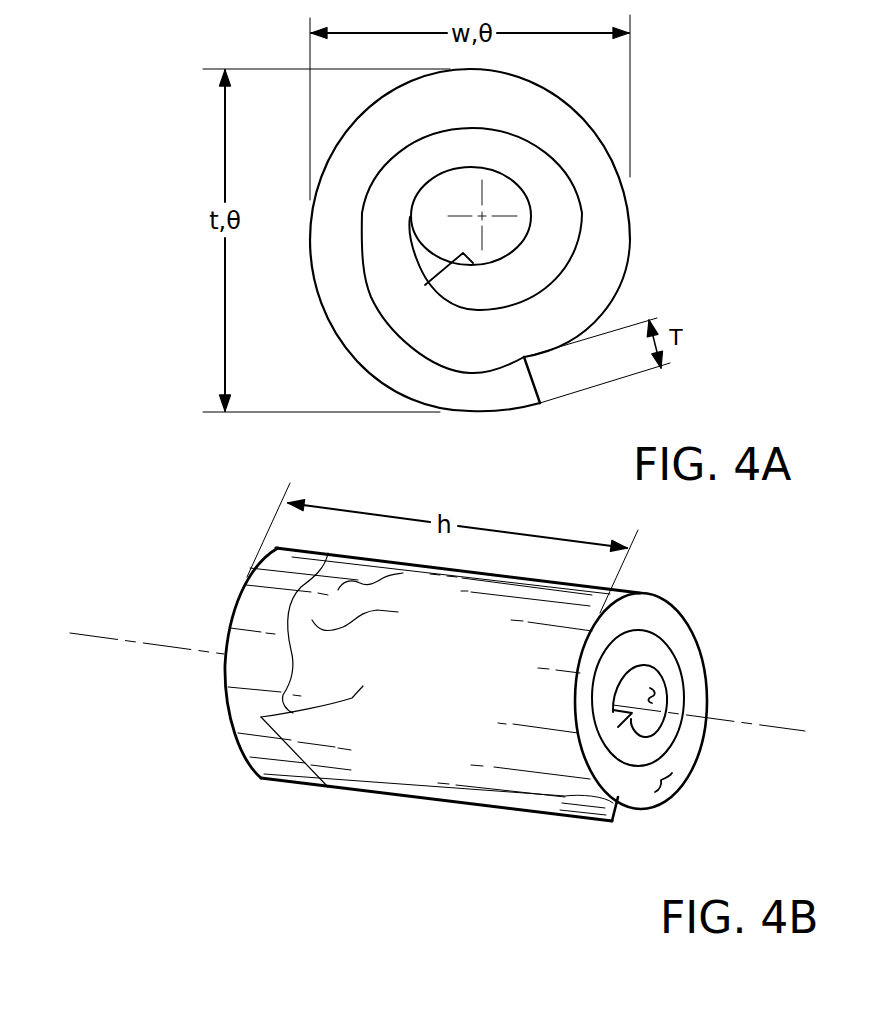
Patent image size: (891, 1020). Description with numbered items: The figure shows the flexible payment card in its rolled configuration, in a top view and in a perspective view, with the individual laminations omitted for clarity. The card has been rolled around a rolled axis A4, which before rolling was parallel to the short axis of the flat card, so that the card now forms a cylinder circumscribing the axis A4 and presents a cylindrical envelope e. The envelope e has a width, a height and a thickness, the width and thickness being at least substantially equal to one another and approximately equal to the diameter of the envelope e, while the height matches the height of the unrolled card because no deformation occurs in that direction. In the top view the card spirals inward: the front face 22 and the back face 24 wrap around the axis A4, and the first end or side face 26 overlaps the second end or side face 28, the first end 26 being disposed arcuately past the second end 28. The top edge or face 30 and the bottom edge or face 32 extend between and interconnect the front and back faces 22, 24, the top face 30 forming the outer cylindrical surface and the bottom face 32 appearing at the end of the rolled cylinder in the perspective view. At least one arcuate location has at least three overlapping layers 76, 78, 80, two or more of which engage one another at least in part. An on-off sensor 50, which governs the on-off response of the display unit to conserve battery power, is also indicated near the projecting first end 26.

In FIG. 4A, the front face 22 is at (358, 230).
In FIG. 4B, the front face 22 is at (324, 738).
In FIG. 4A, the back face 24 is at (472, 175).
In FIG. 4B, the back face 24 is at (653, 695).
In FIG. 4A, the first end or side face 26 is at (537, 380).
In FIG. 4B, the first end or side face 26 is at (618, 808).
In FIG. 4A, the second end or side face 28 is at (443, 260).
In FIG. 4B, the second end or side face 28 is at (660, 682).
In FIG. 4A, the top edge or face 30 is at (603, 262).
In FIG. 4B, the top edge or face 30 is at (229, 626).
In FIG. 4B, the bottom edge or face 32 is at (678, 781).
In FIG. 4A, the on-off sensor 50 is at (515, 390).
In FIG. 4A, the overlapping layer 76 is at (463, 287).
In FIG. 4B, the overlapping layer 76 is at (627, 737).
In FIG. 4A, the overlapping layer 78 is at (472, 338).
In FIG. 4B, the overlapping layer 78 is at (615, 768).
In FIG. 4B, the overlapping layer 80 is at (598, 796).
In FIG. 4A, the rolled axis A4 is at (483, 214).
In FIG. 4B, the rolled axis A4 is at (826, 735).
In FIG. 4A, the cylindrical envelope e is at (629, 158).
In FIG. 4B, the cylindrical envelope e is at (690, 615).